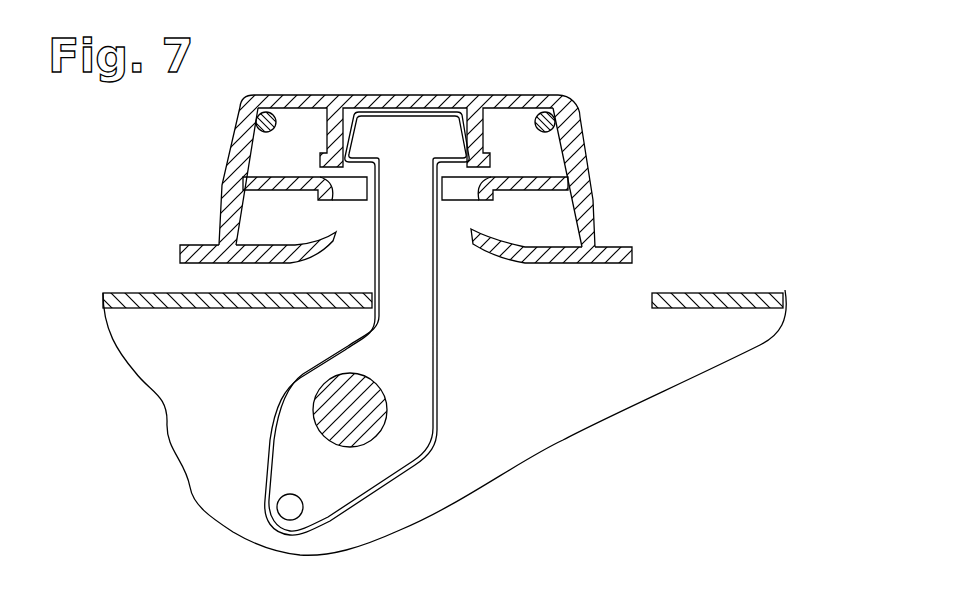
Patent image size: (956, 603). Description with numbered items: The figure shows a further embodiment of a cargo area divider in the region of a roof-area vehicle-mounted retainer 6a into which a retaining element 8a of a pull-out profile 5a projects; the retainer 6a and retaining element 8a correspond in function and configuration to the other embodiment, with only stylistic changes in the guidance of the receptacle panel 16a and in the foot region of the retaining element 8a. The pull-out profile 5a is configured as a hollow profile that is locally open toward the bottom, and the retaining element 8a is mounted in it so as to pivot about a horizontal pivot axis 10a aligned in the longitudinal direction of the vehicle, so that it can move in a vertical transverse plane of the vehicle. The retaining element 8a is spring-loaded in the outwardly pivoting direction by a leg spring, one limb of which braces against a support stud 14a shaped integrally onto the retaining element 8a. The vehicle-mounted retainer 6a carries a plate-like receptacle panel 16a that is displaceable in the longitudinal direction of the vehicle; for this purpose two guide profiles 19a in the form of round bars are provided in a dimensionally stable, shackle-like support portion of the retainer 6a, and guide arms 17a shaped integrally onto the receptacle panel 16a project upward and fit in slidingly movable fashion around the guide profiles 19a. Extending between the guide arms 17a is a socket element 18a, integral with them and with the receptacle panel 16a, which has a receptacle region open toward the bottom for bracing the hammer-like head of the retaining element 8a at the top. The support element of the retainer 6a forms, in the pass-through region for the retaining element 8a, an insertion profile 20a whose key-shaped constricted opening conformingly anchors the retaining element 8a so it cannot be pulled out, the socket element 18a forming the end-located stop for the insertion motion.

The pull-out profile 5a is at (710, 297).
The vehicle-mounted retainer 6a is at (622, 217).
The retaining element 8a is at (440, 293).
The pivot axis 10a is at (377, 413).
The support stud 14a is at (288, 513).
The receptacle panel 16a is at (332, 242).
The guide arm 17a is at (223, 172).
The socket element 18a is at (461, 118).
The guide profile 19a is at (262, 112).
The insertion profile 20a is at (490, 195).